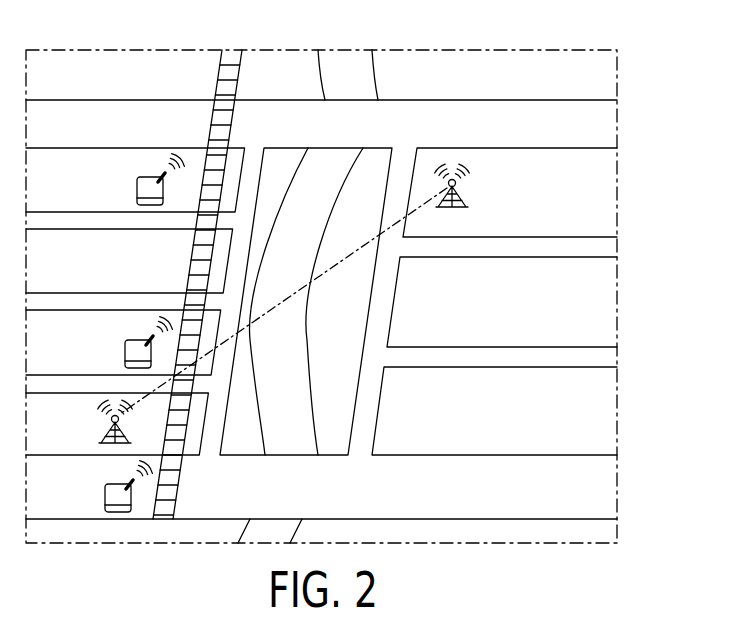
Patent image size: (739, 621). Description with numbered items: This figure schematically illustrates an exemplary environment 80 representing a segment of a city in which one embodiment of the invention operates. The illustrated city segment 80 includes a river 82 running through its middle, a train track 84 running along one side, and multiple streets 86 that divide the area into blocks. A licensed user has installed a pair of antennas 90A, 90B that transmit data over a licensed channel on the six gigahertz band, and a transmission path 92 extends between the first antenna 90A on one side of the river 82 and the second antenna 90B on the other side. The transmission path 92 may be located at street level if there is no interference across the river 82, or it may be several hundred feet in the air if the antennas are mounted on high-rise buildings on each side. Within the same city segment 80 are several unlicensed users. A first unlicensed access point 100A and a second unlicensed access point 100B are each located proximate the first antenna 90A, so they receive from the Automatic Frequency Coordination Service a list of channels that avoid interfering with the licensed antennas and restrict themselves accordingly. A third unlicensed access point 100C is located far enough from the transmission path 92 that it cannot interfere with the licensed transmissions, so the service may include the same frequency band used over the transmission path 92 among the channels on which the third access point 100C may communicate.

The exemplary environment 80 is at (593, 82).
The river 82 is at (301, 417).
The train track 84 is at (217, 70).
The streets 86 is at (521, 138).
The first antenna 90A is at (103, 432).
The second antenna 90B is at (467, 192).
The transmission path 92 is at (332, 267).
The first unlicensed access point 100A is at (105, 497).
The second unlicensed access point 100B is at (125, 350).
The third unlicensed access point 100C is at (137, 189).